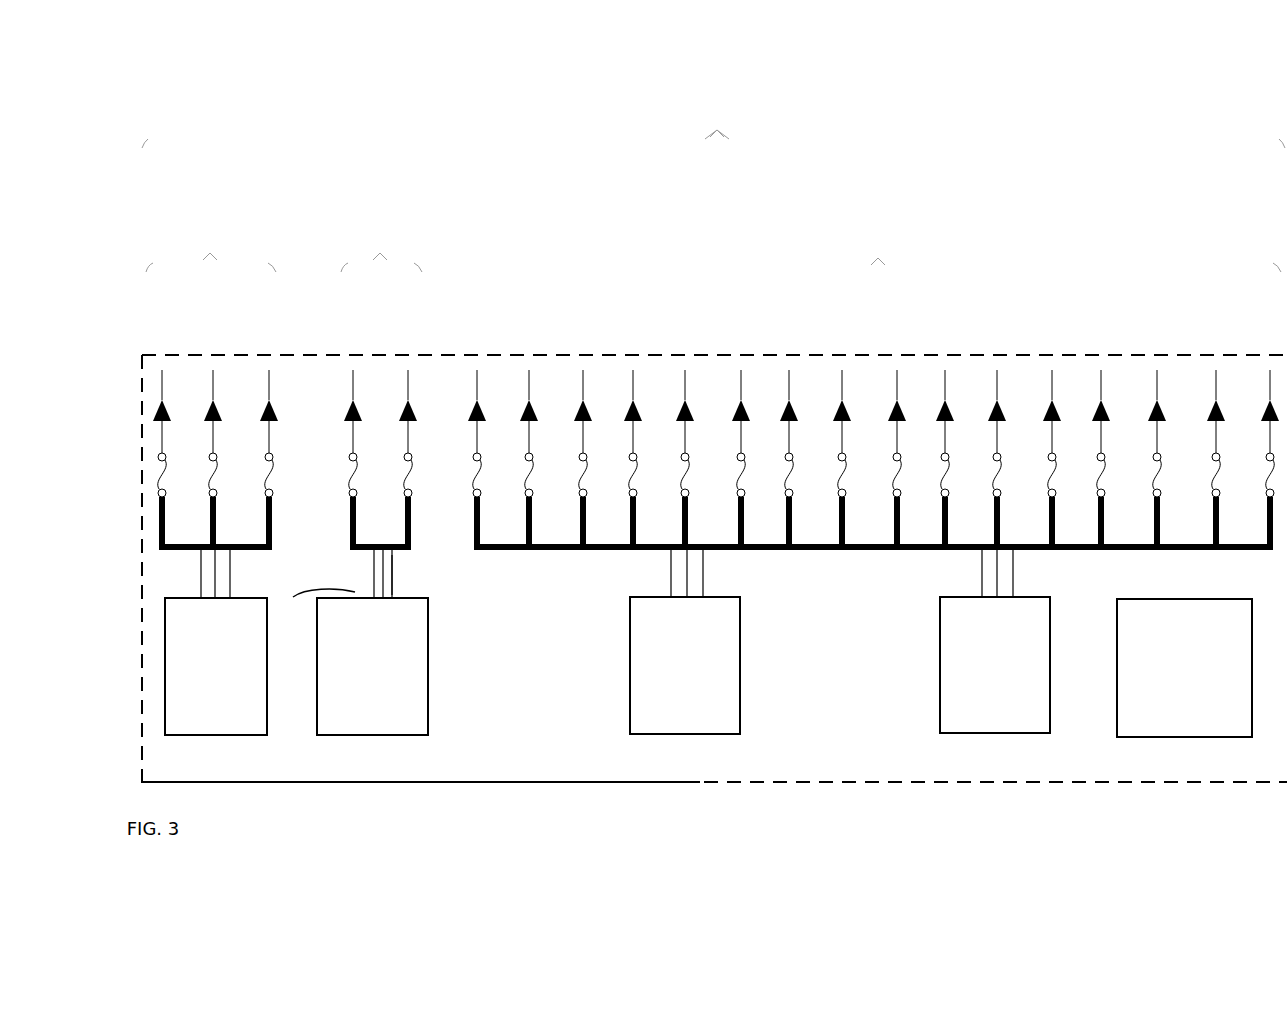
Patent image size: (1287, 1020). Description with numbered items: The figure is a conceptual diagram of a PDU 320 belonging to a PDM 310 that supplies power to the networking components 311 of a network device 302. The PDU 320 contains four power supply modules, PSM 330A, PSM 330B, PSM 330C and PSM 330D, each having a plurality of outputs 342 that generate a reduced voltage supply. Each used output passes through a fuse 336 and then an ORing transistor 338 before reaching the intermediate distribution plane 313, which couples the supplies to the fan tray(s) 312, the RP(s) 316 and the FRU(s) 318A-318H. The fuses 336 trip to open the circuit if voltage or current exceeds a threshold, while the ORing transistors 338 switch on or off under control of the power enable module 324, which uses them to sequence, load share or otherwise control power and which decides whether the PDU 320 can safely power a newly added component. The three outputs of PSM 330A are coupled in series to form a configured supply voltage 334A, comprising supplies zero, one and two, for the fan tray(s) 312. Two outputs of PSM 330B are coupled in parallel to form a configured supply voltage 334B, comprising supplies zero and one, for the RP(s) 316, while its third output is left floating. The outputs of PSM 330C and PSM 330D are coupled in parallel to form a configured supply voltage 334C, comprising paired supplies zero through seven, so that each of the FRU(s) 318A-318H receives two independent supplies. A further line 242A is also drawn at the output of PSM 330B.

The network device 302 is at (1101, 104).
The networking components 311 is at (710, 94).
The fan tray(s) 312 is at (211, 254).
The intermediate distribution plane 313 is at (441, 324).
The RP(s) 316 is at (381, 254).
The FRU(s) 318A-318H is at (876, 257).
The configured supply voltage 334A is at (215, 435).
The configured supply voltage 334B is at (383, 435).
The configured supply voltage 334C is at (873, 435).
The fuse 336 is at (354, 472).
The ORing transistor 338 is at (364, 409).
The outputs 342 is at (359, 577).
The power supply line 242A is at (393, 571).
The power supply module 330A is at (216, 642).
The power supply module 330B is at (360, 662).
The power supply module 330C is at (685, 642).
The power supply module 330D is at (995, 641).
The power enable module 324 is at (1184, 668).
The PDU 320 is at (421, 743).
The PDM 310 is at (969, 804).